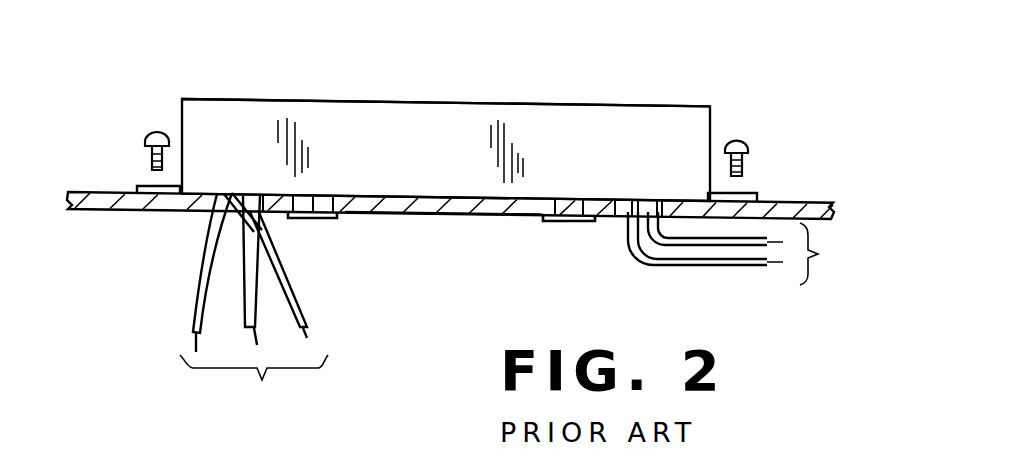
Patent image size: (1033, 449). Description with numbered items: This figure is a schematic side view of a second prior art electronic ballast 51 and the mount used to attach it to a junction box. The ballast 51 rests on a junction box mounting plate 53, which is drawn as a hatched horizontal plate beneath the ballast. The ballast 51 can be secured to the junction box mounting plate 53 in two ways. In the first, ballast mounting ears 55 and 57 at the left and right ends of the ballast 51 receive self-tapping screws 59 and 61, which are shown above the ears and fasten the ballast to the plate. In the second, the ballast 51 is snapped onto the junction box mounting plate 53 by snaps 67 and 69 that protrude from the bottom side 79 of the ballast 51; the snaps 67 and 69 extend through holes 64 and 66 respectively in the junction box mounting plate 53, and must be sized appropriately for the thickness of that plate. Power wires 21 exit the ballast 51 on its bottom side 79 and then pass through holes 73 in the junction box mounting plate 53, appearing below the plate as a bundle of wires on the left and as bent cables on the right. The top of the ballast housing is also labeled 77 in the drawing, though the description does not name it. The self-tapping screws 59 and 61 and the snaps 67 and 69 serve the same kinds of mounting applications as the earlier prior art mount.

The power wires 21 is at (523, 304).
The ballast 51 is at (527, 143).
The junction box mounting plate 53 is at (797, 203).
The ballast mounting ear 55 is at (137, 190).
The ballast mounting ear 57 is at (755, 195).
The self-tapping screw 59 is at (157, 133).
The self-tapping screw 61 is at (733, 140).
The hole 64 is at (515, 213).
The hole 66 is at (343, 200).
The snap 67 is at (302, 215).
The snap 69 is at (570, 227).
The holes 73 is at (618, 215).
The housing cover 77 is at (445, 102).
The bottom side 79 is at (420, 213).